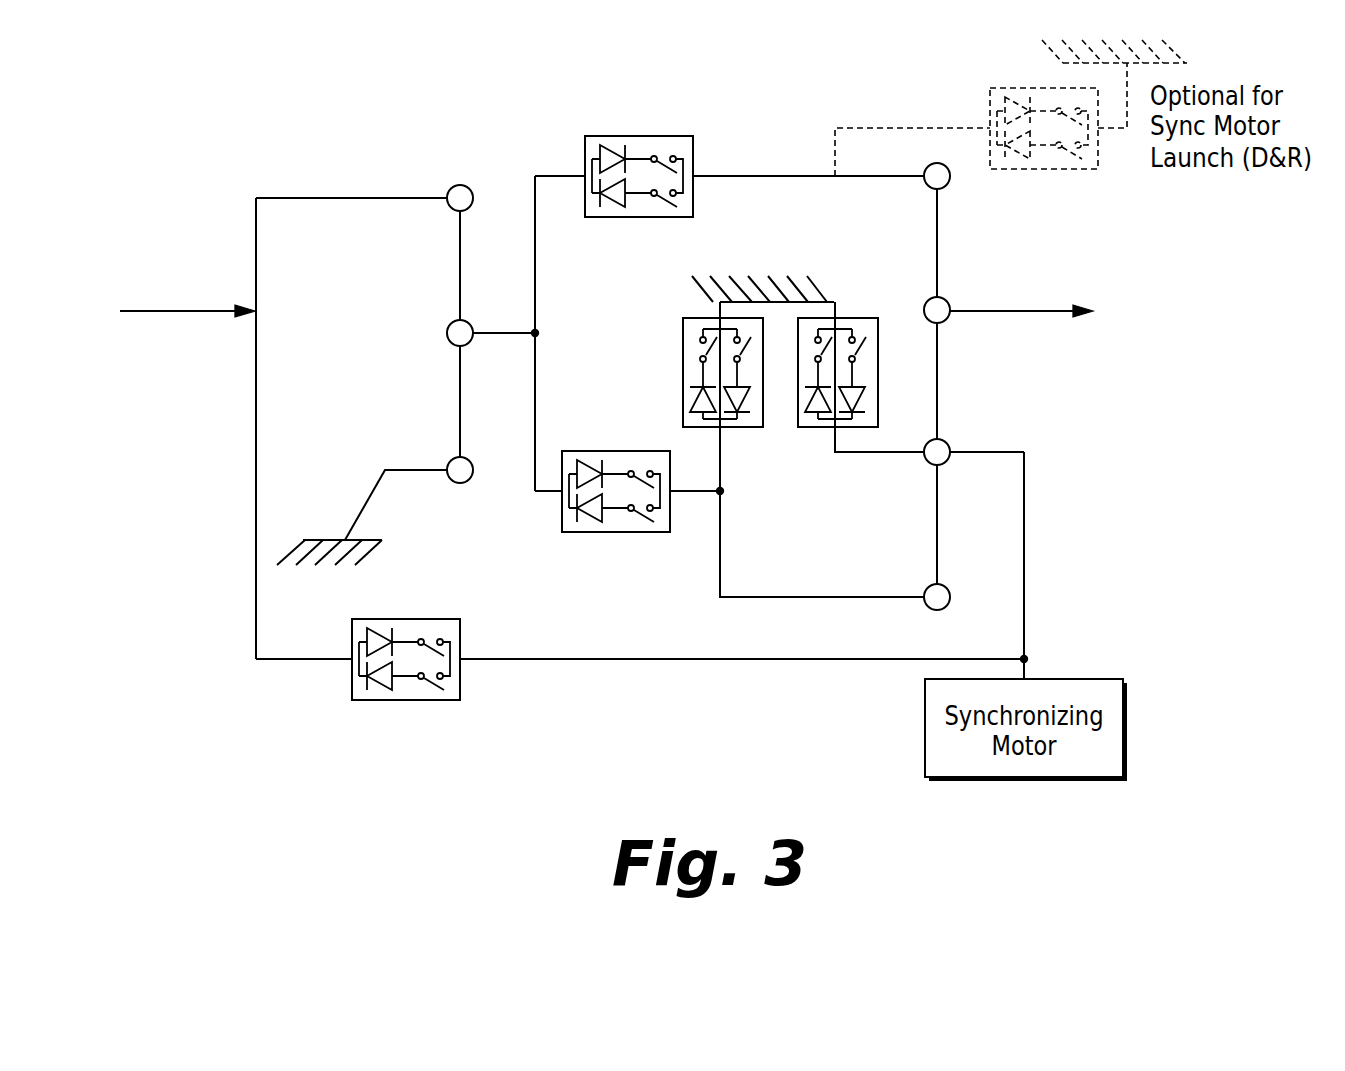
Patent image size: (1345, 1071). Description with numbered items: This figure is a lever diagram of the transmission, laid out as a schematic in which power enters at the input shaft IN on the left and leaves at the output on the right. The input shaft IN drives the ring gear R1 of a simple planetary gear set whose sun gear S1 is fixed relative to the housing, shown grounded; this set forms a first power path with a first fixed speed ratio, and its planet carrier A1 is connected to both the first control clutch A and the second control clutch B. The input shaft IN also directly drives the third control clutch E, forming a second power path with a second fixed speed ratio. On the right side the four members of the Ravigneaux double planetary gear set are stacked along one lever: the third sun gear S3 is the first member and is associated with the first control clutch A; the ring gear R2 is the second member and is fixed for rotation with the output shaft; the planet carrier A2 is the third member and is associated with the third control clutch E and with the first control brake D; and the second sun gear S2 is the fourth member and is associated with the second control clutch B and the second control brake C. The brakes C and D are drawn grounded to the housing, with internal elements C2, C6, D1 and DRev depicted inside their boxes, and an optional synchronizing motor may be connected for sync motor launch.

The input shaft IN is at (187, 325).
The ring gear R1 is at (472, 214).
The planet carrier A1 is at (472, 350).
The sun gear S1 is at (472, 484).
The third sun gear S3 is at (950, 191).
The ring gear R2 is at (1008, 322).
The planet carrier A2 is at (951, 467).
The second sun gear S2 is at (950, 611).
The first control clutch A is at (533, 178).
The second control clutch B is at (616, 508).
The second control brake C is at (705, 370).
The switch element C2 is at (699, 362).
The diode element C6 is at (699, 400).
The first control brake D is at (865, 373).
The switch element D1 is at (864, 365).
The reverse diode element D Rev DRev is at (868, 403).
The third control clutch E is at (349, 660).